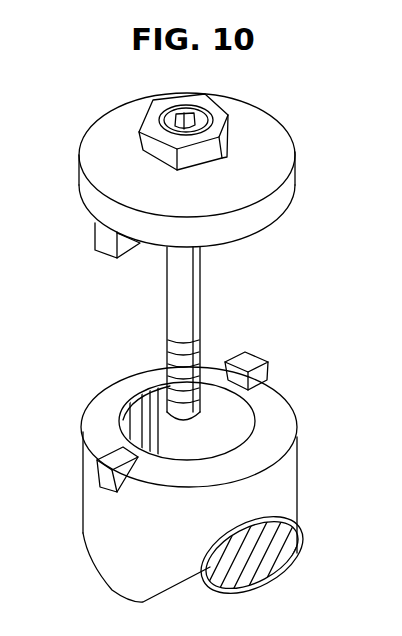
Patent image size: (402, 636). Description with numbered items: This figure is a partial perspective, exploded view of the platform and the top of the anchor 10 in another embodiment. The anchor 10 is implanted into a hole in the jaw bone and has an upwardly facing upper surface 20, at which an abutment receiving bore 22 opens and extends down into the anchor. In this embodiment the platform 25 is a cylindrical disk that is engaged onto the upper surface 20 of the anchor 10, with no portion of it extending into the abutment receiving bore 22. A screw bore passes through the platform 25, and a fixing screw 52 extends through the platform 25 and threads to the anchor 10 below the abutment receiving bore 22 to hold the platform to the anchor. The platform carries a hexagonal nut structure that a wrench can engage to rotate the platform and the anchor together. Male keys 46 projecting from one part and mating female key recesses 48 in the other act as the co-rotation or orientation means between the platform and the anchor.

The anchor 10 is at (306, 478).
The upper surface 20 is at (115, 392).
The abutment receiving bore 22 is at (252, 408).
The platform 25 is at (293, 139).
The male key 46 is at (102, 247).
The female key recess 48 is at (126, 472).
The fixing screw 52 is at (192, 280).